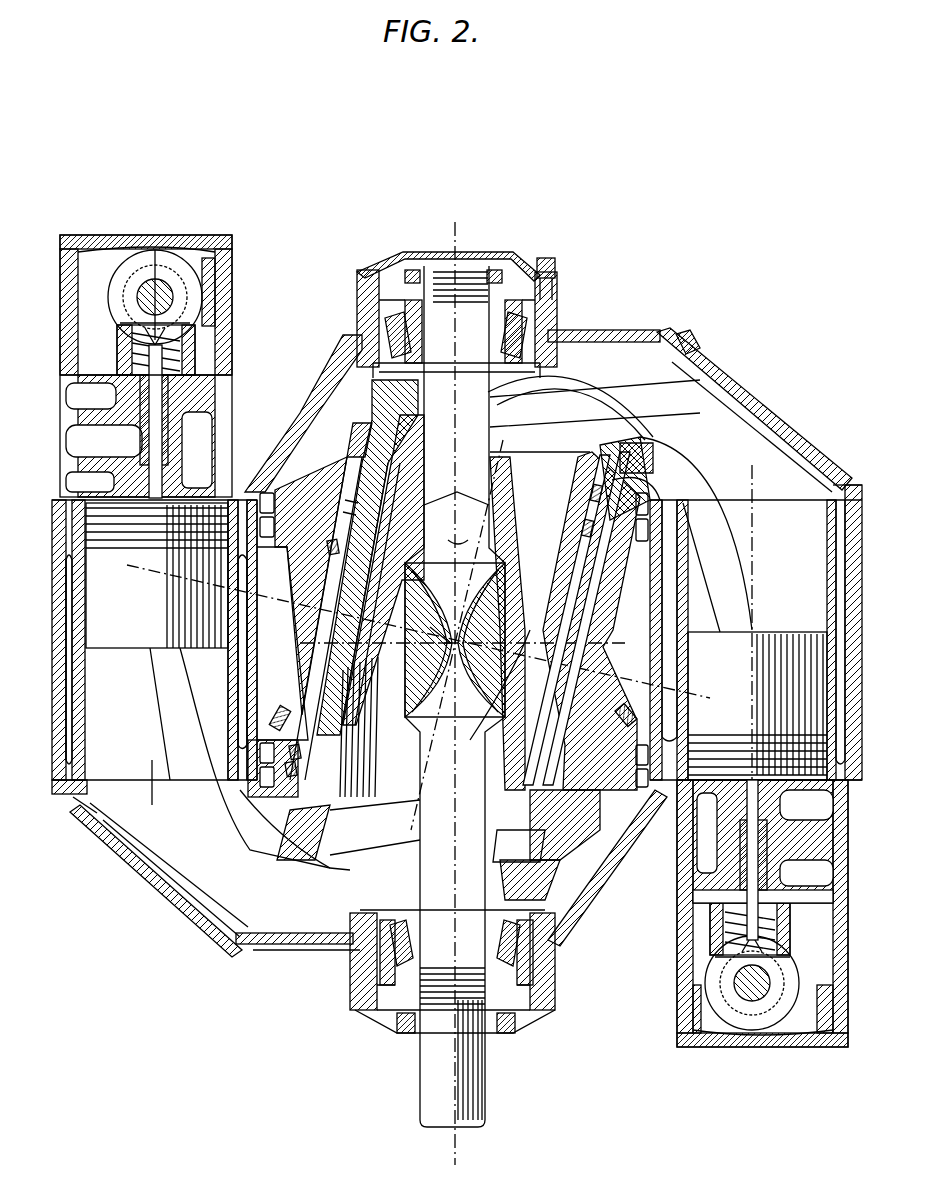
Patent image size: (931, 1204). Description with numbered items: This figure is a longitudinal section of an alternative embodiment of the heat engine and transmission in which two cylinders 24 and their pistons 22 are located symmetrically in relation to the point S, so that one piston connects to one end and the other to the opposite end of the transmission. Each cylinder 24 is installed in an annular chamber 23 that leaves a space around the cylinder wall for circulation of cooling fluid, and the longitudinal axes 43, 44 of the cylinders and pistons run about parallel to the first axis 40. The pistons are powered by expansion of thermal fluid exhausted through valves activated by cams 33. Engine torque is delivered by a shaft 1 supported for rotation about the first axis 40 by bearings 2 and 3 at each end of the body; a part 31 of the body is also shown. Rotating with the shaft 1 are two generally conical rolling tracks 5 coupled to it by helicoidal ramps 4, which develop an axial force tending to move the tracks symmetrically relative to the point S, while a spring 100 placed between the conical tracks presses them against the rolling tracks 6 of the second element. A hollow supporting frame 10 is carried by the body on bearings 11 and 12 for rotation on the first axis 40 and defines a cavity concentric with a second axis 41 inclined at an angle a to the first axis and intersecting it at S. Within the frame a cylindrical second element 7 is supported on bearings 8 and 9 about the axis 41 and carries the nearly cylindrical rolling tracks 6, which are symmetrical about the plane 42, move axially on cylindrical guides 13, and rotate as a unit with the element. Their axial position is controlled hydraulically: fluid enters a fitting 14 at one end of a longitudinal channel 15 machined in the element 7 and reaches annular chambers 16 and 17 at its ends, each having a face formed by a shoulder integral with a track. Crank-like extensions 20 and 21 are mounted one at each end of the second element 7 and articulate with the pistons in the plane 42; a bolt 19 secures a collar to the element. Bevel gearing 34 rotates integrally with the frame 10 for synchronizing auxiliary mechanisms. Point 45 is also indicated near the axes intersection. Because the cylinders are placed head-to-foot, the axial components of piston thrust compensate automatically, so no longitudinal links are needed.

The shaft 1 is at (468, 320).
The bearings 2 is at (520, 292).
The bearings 3 is at (365, 952).
The helicoidal ramps 4 is at (520, 562).
The rolling tracks 5 is at (512, 470).
The rolling tracks 6 is at (345, 855).
The cylindrical second element 7 is at (360, 525).
The bearings 8 is at (357, 452).
The bearings 9 is at (262, 826).
The supporting frame 10 is at (290, 500).
The bearings 11 is at (668, 490).
The bearings 12 is at (262, 793).
The cylindrical guides 13 is at (318, 612).
The fitting 14 is at (648, 432).
The longitudinal channel 15 is at (575, 790).
The annular chamber 16 is at (540, 858).
The annular chamber 17 is at (594, 490).
The bolt 19 is at (380, 400).
The crank-like extension 20 is at (185, 745).
The crank-like extension 21 is at (702, 462).
The pistons 22 is at (60, 580).
The annular chamber 23 is at (62, 520).
The cylinders 24 is at (72, 660).
The part of the body 31 is at (360, 296).
The cams 33 is at (60, 262).
The bevel gearing 34 is at (282, 708).
The first axis 40 is at (455, 246).
The second axis 41 is at (548, 392).
The plane 42 is at (165, 610).
The longitudinal axis 43 is at (168, 560).
The longitudinal axis 44 is at (754, 572).
The pivot center 45 is at (448, 644).
The spring 100 is at (495, 685).
The point of axes intersection S is at (426, 623).
The angle a is at (458, 532).